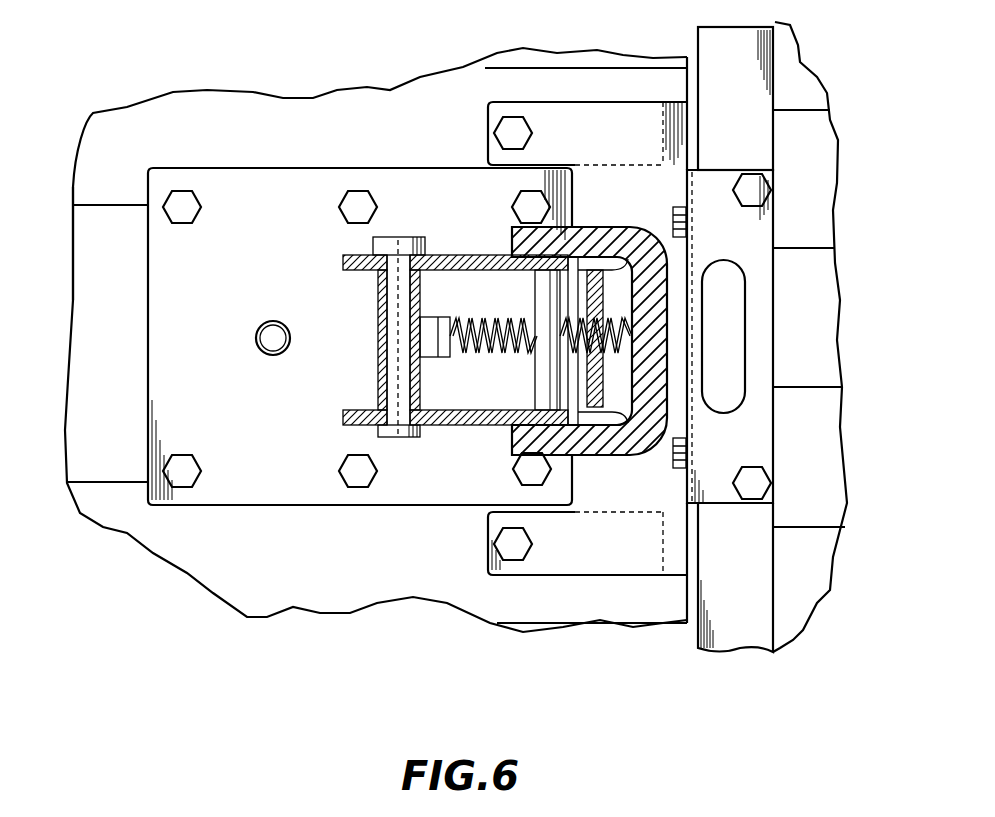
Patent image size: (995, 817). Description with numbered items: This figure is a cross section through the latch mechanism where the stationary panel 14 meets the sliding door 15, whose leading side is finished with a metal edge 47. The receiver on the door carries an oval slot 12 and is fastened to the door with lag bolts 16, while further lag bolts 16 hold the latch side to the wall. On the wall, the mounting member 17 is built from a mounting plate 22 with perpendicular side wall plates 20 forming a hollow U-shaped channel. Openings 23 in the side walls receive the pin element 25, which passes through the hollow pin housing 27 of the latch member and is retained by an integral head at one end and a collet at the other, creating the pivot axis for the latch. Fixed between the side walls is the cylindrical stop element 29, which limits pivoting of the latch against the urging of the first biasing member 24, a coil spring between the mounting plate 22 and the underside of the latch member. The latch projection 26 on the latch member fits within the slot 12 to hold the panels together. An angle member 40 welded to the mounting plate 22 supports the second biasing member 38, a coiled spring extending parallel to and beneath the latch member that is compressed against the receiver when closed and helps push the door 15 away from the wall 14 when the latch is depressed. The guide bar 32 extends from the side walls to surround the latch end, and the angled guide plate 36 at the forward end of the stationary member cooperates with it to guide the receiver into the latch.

The slot 12 is at (708, 335).
The stationary panel 14 is at (254, 146).
The sliding door 15 is at (820, 335).
The lag bolts 16 is at (180, 200).
The mounting member 17 is at (422, 168).
The side wall plates 20 is at (343, 262).
The mounting plate 22 is at (277, 254).
The openings 23 is at (373, 422).
The first biasing member 24 is at (258, 330).
The pin element 25 is at (370, 255).
The latch projection 26 is at (609, 240).
The pin housing 27 is at (420, 282).
The stop element 29 is at (537, 390).
The guide bar 32 is at (640, 232).
The guide plate 36 is at (688, 110).
The second biasing member 38 is at (518, 320).
The angle member 40 is at (422, 355).
The metal edge 47 is at (762, 550).